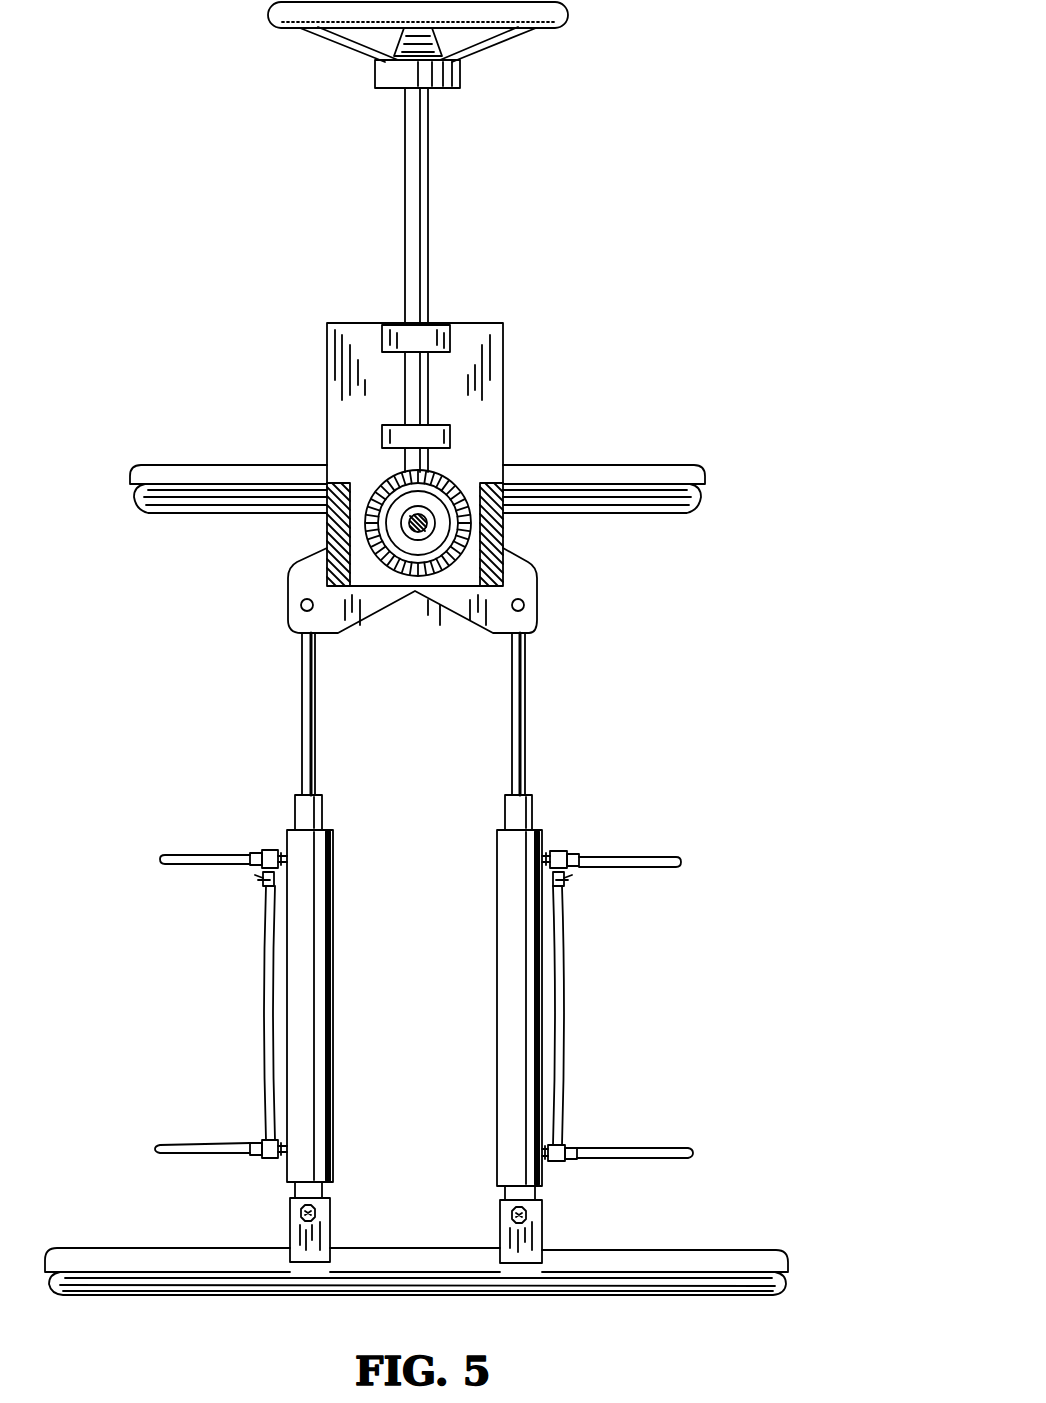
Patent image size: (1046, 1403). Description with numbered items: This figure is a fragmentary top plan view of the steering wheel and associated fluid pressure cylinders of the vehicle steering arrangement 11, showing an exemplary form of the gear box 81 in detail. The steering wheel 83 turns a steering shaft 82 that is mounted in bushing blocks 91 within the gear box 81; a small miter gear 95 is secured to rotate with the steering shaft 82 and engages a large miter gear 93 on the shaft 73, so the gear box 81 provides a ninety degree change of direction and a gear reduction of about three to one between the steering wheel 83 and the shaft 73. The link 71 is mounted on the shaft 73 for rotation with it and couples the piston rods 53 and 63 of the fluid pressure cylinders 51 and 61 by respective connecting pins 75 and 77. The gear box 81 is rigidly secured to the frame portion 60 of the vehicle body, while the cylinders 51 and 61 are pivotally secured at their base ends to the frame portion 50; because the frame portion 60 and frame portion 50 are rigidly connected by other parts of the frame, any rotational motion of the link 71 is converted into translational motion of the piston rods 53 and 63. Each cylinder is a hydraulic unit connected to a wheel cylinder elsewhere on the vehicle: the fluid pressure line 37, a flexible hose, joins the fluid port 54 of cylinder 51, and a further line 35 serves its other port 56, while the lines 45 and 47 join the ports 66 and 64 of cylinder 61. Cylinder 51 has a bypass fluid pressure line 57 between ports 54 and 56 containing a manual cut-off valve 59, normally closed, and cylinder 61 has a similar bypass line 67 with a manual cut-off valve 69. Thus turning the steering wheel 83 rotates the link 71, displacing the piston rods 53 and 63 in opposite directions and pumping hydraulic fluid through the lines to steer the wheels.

The adjustable squeegee assembly 11 is at (300, 550).
The left lower hydraulic hose 35 is at (172, 1143).
The fluid pressure line 37 is at (205, 855).
The fluid pressure line 45 is at (640, 1148).
The fluid pressure line 47 is at (628, 857).
The frame portion 50 is at (375, 1250).
The fluid pressure cylinder 51 is at (333, 985).
The piston rod 53 is at (302, 687).
The fluid port 54 is at (266, 850).
The port 56 is at (262, 1142).
The bypass fluid pressure line 57 is at (265, 980).
The manual cut-off valve 59 is at (260, 880).
The frame portion 60 is at (268, 465).
The fluid pressure cylinder 61 is at (497, 940).
The piston rod 63 is at (525, 692).
The port 64 is at (560, 851).
The port 66 is at (560, 1145).
The bypass line 67 is at (564, 990).
The manual cut-off valve 69 is at (570, 880).
The link 71 is at (540, 560).
The shaft 73 is at (378, 488).
The connecting pin 75 is at (300, 605).
The connecting pin 77 is at (525, 605).
The gear box 81 is at (506, 484).
The steering shaft 82 is at (428, 140).
The steering wheel 83 is at (572, 12).
The bushing blocks 91 is at (432, 330).
The large miter gear 93 is at (382, 565).
The small miter gear 95 is at (424, 482).